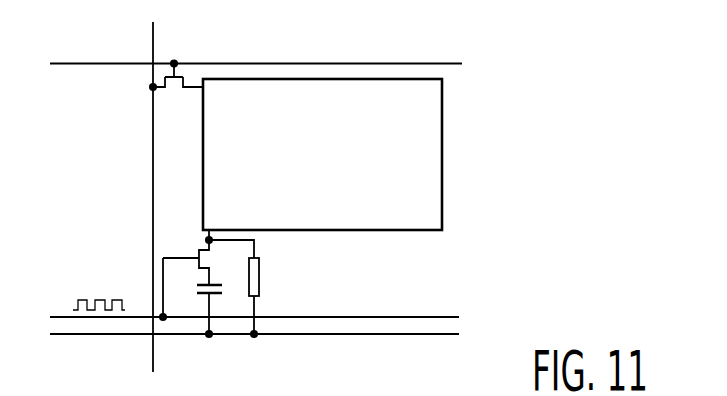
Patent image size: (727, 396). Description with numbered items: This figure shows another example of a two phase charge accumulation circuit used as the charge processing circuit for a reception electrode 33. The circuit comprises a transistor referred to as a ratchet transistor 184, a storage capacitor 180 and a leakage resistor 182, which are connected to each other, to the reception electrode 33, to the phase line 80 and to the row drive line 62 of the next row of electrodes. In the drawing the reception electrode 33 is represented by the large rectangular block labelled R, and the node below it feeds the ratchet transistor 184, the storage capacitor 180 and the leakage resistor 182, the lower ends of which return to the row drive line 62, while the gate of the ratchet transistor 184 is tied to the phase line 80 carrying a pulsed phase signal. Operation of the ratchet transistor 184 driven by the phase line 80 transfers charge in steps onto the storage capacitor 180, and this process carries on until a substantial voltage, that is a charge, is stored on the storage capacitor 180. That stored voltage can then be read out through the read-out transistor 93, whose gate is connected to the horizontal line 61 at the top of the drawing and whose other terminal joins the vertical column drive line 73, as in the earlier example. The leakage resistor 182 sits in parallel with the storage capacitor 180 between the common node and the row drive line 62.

The scanning line 61 is at (68, 62).
The column drive line 73 is at (153, 29).
The read-out transistor 93 is at (181, 60).
The reception electrode 33 is at (403, 131).
The ratchet transistor 184 is at (197, 252).
The leakage resistor 182 is at (260, 277).
The storage capacitor 180 is at (205, 296).
The phase line 80 is at (58, 312).
The row drive line 62 is at (63, 337).